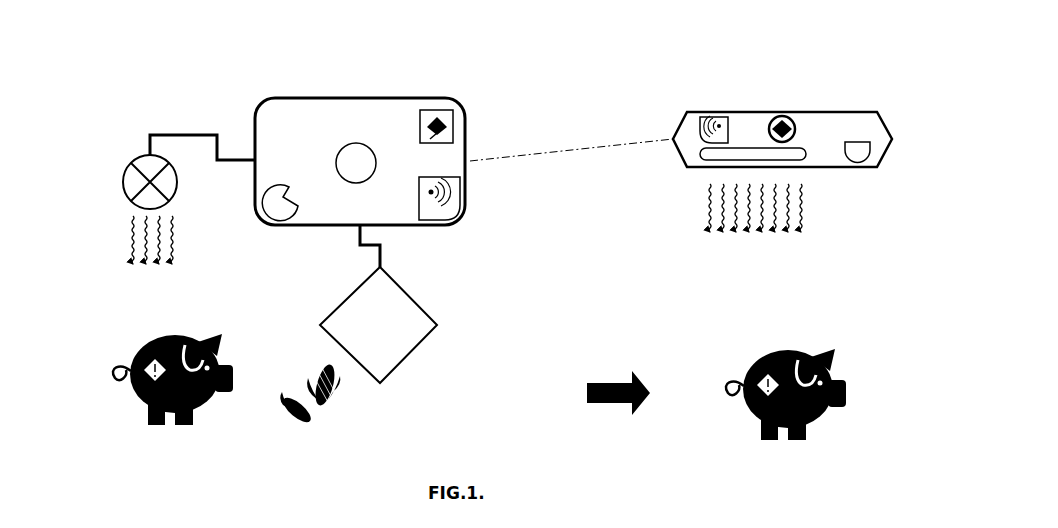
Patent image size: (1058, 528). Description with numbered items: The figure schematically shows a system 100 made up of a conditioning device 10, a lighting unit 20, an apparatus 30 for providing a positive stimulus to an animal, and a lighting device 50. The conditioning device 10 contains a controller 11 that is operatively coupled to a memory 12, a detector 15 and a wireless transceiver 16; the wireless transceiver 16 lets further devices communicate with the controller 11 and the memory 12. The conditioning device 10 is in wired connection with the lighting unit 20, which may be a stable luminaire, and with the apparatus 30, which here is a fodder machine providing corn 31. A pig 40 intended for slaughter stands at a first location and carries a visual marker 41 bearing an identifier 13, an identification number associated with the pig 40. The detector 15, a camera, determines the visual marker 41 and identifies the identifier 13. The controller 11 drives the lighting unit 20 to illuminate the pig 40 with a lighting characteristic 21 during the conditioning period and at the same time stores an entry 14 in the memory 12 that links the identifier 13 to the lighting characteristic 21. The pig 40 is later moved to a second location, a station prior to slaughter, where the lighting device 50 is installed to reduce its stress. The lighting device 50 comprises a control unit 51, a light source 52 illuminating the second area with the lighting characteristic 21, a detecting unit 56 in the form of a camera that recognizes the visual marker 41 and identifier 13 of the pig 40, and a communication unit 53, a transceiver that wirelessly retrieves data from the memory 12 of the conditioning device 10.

The system 100 is at (122, 88).
The conditioning device 10 is at (432, 86).
The controller 11 is at (340, 150).
The memory 12 is at (419, 118).
The identifier 13 is at (416, 142).
The entry 14 is at (786, 120).
The detector 15 is at (283, 197).
The wireless transceiver 16 is at (419, 200).
The lighting unit 20 is at (119, 194).
The lighting characteristic 21 is at (172, 247).
The apparatus for providing a positive stimulus to an animal 30 is at (420, 290).
The corn 31 is at (338, 407).
The pig 40 is at (118, 410).
The visual marker 41 is at (150, 360).
The lighting device 50 is at (673, 121).
The control unit 51 is at (795, 131).
The light source 52 is at (706, 161).
The communication unit 53 is at (716, 117).
The detecting unit 56 is at (864, 162).